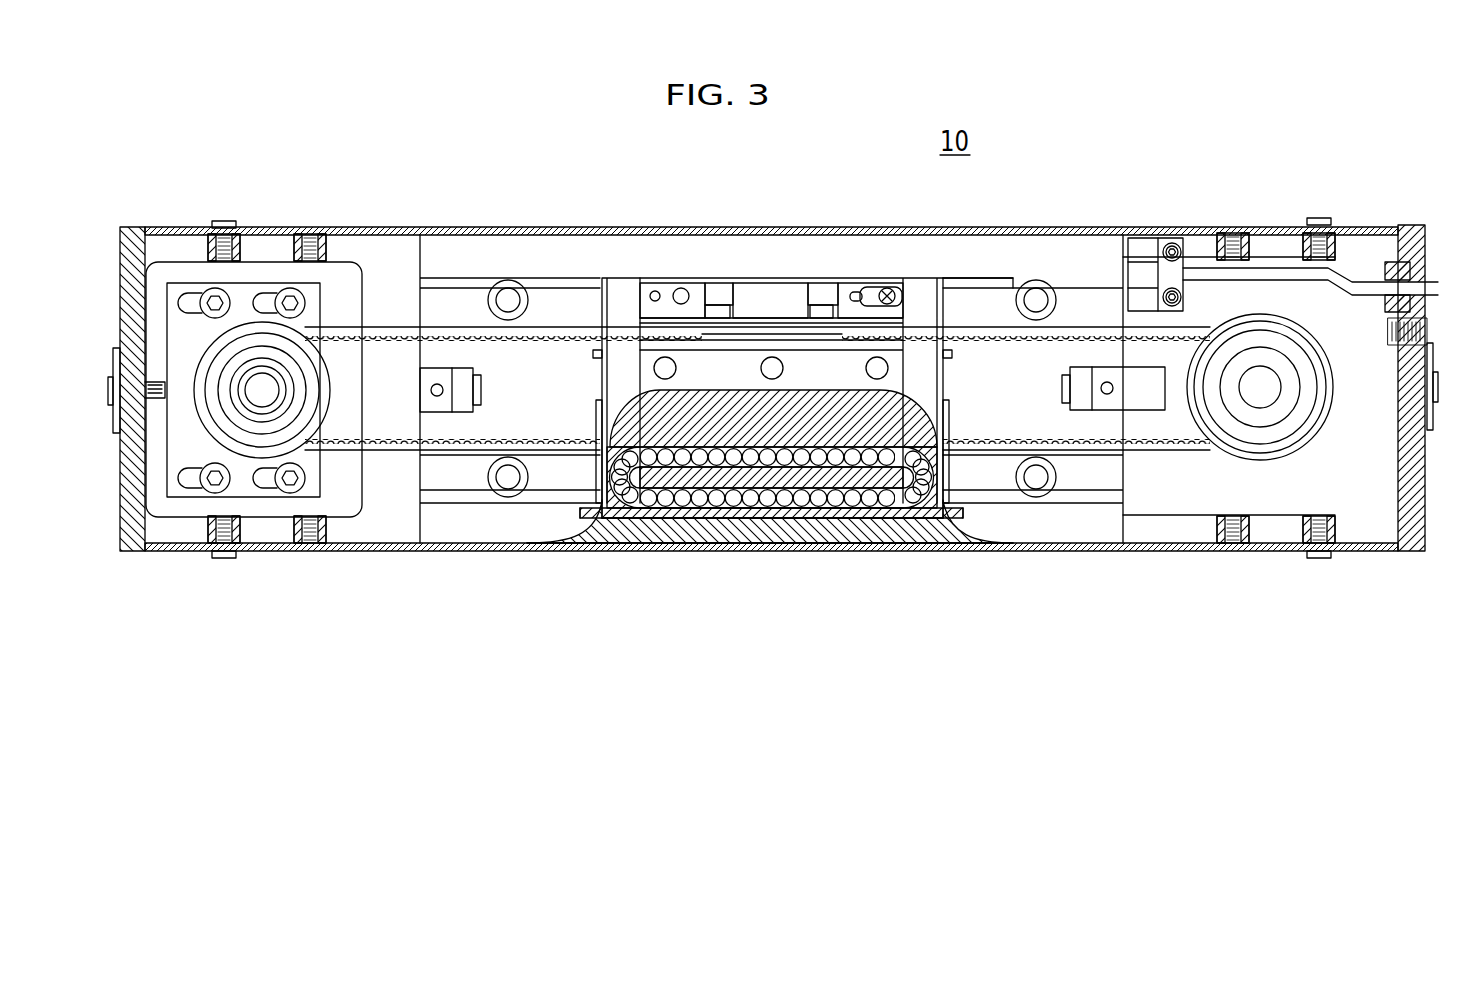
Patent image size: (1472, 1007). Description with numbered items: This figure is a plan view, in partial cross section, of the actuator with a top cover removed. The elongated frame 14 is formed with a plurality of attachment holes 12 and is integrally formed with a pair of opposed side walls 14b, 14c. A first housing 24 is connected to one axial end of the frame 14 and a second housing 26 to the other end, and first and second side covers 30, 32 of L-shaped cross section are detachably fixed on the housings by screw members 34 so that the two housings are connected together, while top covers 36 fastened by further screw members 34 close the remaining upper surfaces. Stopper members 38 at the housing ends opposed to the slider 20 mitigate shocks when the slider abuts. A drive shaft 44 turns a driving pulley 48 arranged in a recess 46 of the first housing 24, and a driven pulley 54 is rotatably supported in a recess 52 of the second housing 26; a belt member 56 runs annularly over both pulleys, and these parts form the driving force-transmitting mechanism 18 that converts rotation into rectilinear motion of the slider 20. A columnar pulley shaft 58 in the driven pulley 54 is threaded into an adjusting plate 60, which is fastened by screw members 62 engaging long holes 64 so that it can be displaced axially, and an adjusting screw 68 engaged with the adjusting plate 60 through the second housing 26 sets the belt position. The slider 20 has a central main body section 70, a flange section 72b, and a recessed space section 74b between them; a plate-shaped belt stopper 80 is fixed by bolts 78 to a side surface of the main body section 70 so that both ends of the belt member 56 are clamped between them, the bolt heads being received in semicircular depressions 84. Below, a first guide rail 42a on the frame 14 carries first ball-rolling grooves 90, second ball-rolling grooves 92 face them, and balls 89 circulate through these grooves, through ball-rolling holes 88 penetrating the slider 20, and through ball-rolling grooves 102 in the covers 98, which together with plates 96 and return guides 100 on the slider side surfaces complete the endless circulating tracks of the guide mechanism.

The attachment holes 12 is at (508, 290).
The frame 14 is at (825, 550).
The side wall 14b is at (922, 276).
The side wall 14c is at (730, 551).
The driving force-transmitting mechanism 18 is at (1064, 320).
The slider 20 is at (753, 338).
The first housing 24 is at (1413, 551).
The second housing 26 is at (127, 530).
The first side cover 30 is at (353, 551).
The second side cover 32 is at (370, 227).
The screw members 34 is at (225, 221).
The top covers 36 is at (113, 352).
The stopper members 38 is at (481, 390).
The first guide rail 42a is at (692, 518).
The drive shaft 44 is at (1263, 387).
The recess 46 is at (1353, 483).
The driving pulley 48 is at (1280, 455).
The recess 52 is at (172, 268).
The driven pulley 54 is at (312, 405).
The belt member 56 is at (586, 327).
The pulley shaft 58 is at (266, 388).
The adjusting plate 60 is at (167, 285).
The screw members 62 is at (215, 288).
The long holes 64 is at (195, 313).
The adjusting screw 68 is at (167, 482).
The main body section 70 is at (640, 370).
The flange section 72b is at (788, 300).
The space section 74b is at (645, 283).
The bolts 78 is at (713, 290).
The belt stopper 80 is at (820, 327).
The depressions 84 is at (667, 318).
The ball-rolling holes 88 is at (710, 455).
The balls 89 is at (762, 530).
The first ball-rolling grooves 90 is at (870, 512).
The second ball-rolling grooves 92 is at (783, 498).
The plates 96 is at (580, 520).
The covers 98 is at (603, 508).
The return guides 100 is at (597, 440).
The ball-rolling grooves 102 is at (604, 410).